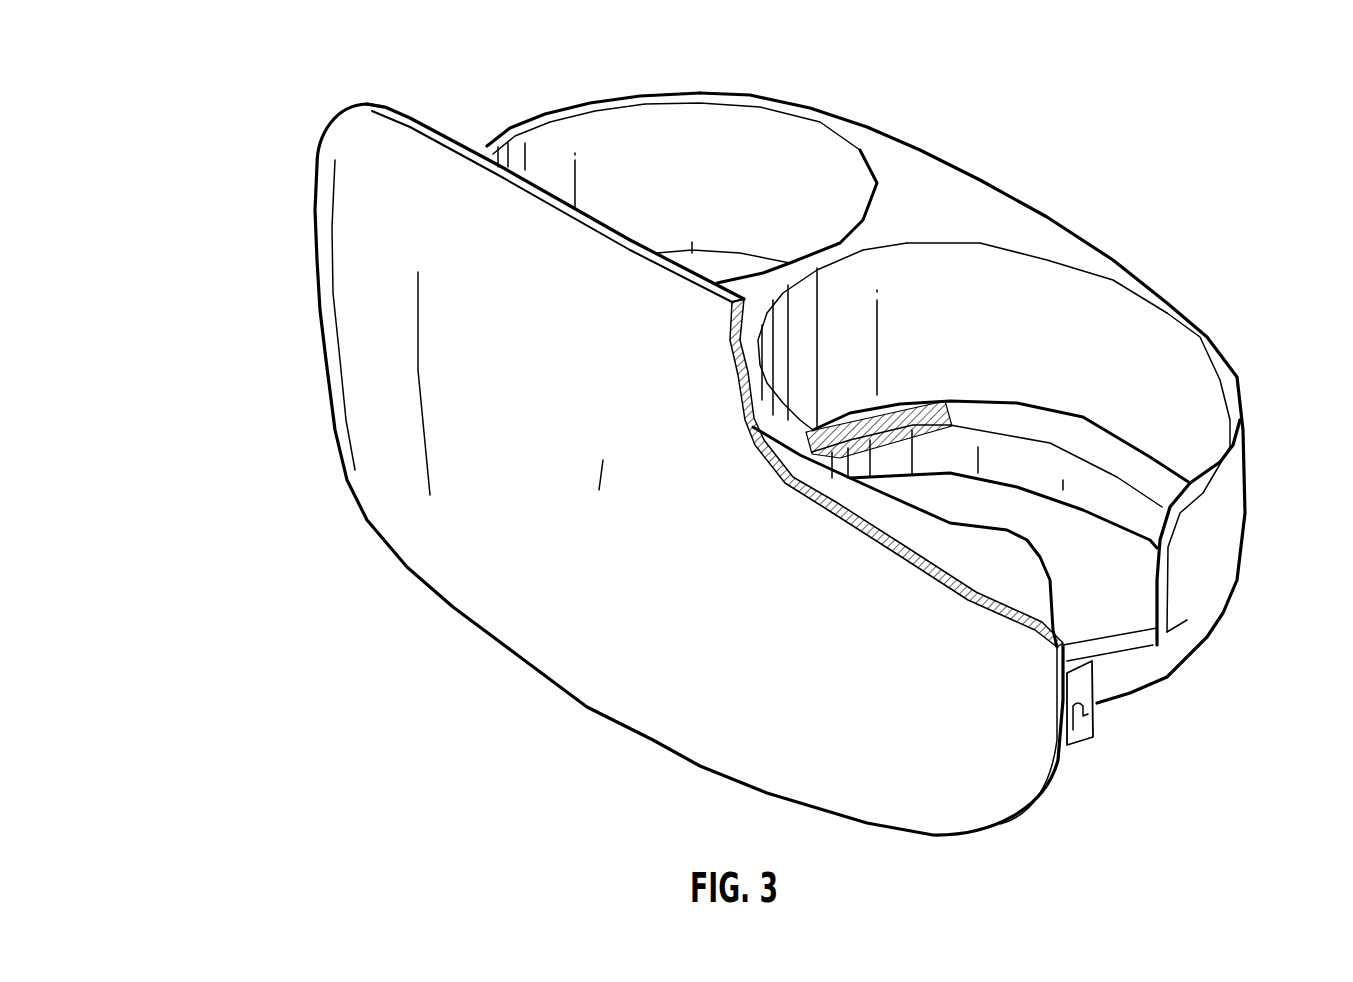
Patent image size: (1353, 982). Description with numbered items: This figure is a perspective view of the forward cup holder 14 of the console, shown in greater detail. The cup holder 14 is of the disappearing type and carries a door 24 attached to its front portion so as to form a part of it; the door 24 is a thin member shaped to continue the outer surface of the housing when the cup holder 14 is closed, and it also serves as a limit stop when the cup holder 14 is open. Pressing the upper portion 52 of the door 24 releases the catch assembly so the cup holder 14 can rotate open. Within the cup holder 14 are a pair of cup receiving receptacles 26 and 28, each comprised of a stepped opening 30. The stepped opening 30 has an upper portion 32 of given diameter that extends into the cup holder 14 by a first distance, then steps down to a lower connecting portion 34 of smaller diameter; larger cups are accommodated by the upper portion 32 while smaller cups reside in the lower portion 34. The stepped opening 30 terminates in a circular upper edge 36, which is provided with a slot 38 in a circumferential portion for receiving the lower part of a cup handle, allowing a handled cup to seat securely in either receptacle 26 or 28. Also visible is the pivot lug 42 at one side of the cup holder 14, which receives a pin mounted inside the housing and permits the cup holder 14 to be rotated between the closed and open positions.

The cup holder 14 is at (624, 771).
The door 24 is at (357, 413).
The cup receiving receptacle 26 is at (757, 138).
The cup receiving receptacle 28 is at (993, 267).
The stepped opening 30 is at (683, 211).
The upper portion 32 is at (1172, 355).
The lower connecting portion 34 is at (1105, 490).
The upper edge 36 is at (1228, 453).
The slot 38 is at (1163, 593).
The pivot lug 42 is at (1085, 697).
The upper portion 52 is at (455, 178).